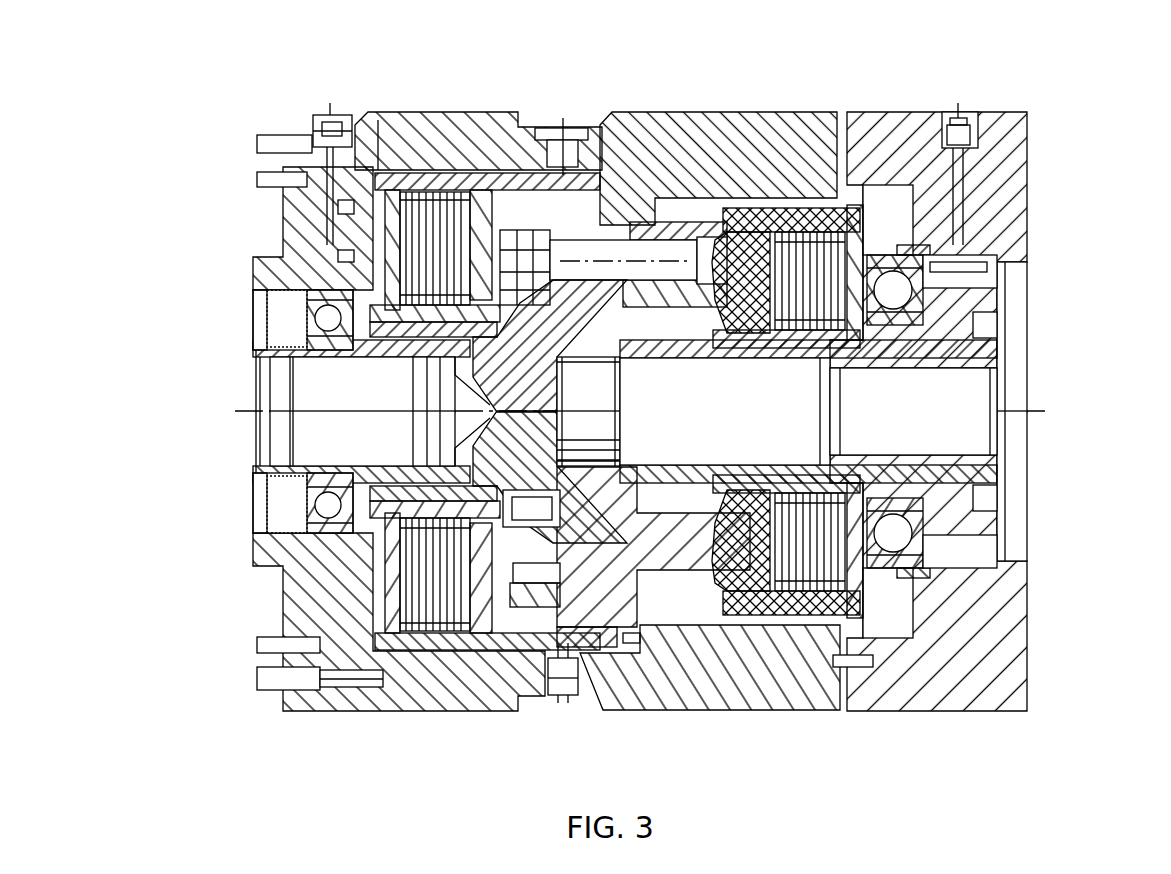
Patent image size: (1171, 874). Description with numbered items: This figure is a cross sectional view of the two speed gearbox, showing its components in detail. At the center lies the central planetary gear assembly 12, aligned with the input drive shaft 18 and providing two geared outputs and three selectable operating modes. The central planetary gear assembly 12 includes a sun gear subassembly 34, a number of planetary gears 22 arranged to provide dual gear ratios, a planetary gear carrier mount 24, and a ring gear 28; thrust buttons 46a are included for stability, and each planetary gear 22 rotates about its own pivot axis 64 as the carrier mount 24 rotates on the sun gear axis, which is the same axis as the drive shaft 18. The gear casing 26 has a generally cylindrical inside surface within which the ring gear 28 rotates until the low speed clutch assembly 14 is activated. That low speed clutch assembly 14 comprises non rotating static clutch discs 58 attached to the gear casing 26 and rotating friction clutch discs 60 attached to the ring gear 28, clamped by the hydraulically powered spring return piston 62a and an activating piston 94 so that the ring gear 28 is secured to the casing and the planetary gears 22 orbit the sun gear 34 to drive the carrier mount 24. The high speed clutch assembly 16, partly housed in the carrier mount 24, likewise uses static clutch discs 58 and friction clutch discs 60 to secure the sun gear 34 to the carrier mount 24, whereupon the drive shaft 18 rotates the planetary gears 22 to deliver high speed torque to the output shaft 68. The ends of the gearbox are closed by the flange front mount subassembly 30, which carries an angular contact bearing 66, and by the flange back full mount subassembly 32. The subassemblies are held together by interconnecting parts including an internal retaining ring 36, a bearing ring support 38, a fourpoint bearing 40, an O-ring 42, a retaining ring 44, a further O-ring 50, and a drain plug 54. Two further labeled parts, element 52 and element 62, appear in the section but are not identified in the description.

The central planetary gear assembly 12 is at (760, 680).
The low speed clutch assembly 14 is at (425, 190).
The high speed clutch assembly 16 is at (808, 210).
The input drive shaft 18 is at (1057, 411).
The planetary gears 22 is at (705, 660).
The planetary gear carrier mount 24 is at (672, 225).
The gear casing 26 is at (367, 130).
The ring gear 28 is at (490, 185).
The flange front mount subassembly 30 is at (828, 210).
The flange back full mount subassembly 32 is at (385, 150).
The sun gear subassembly 34 is at (268, 330).
The internal retaining ring 36 is at (287, 540).
The bearing ring support 38 is at (295, 547).
The fourpoint bearing 40 is at (312, 690).
The O-ring 42 is at (357, 690).
The retaining ring 44 is at (277, 533).
The thrust buttons 46a is at (650, 690).
The O-ring 50 is at (845, 660).
The end housing 52 is at (967, 580).
The drain plug 54 is at (578, 690).
The static clutch discs 58 is at (397, 185).
The rotating friction clutch discs 60 is at (350, 207).
The bearing 62 is at (923, 580).
The hydraulically powered spring return piston 62a is at (350, 260).
The pivot axis 64 is at (545, 600).
The angular contact bearing 66 is at (922, 245).
The output shaft 68 is at (345, 455).
The activating piston 94 is at (528, 605).